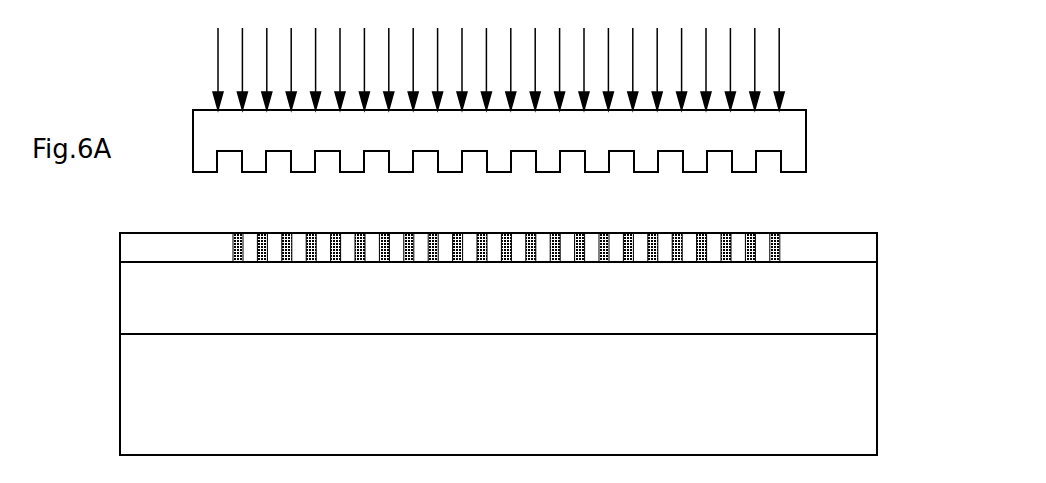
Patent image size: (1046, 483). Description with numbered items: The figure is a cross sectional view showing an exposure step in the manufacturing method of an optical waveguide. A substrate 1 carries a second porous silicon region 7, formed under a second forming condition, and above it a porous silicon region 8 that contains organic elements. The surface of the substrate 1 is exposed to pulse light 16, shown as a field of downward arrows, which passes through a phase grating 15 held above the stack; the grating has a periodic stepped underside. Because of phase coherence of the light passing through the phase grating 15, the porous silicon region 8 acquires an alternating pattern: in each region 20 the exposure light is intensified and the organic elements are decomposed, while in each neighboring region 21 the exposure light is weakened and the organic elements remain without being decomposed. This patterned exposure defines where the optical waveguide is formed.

The substrate 1 is at (857, 382).
The second porous silicon region 7 is at (867, 295).
The porous silicon region 8 is at (818, 238).
The phase grating 15 is at (793, 125).
The pulse light 16 is at (779, 60).
The region in which the exposure light is intensified 20 is at (772, 238).
The region in which the exposure light is weakened 21 is at (323, 240).